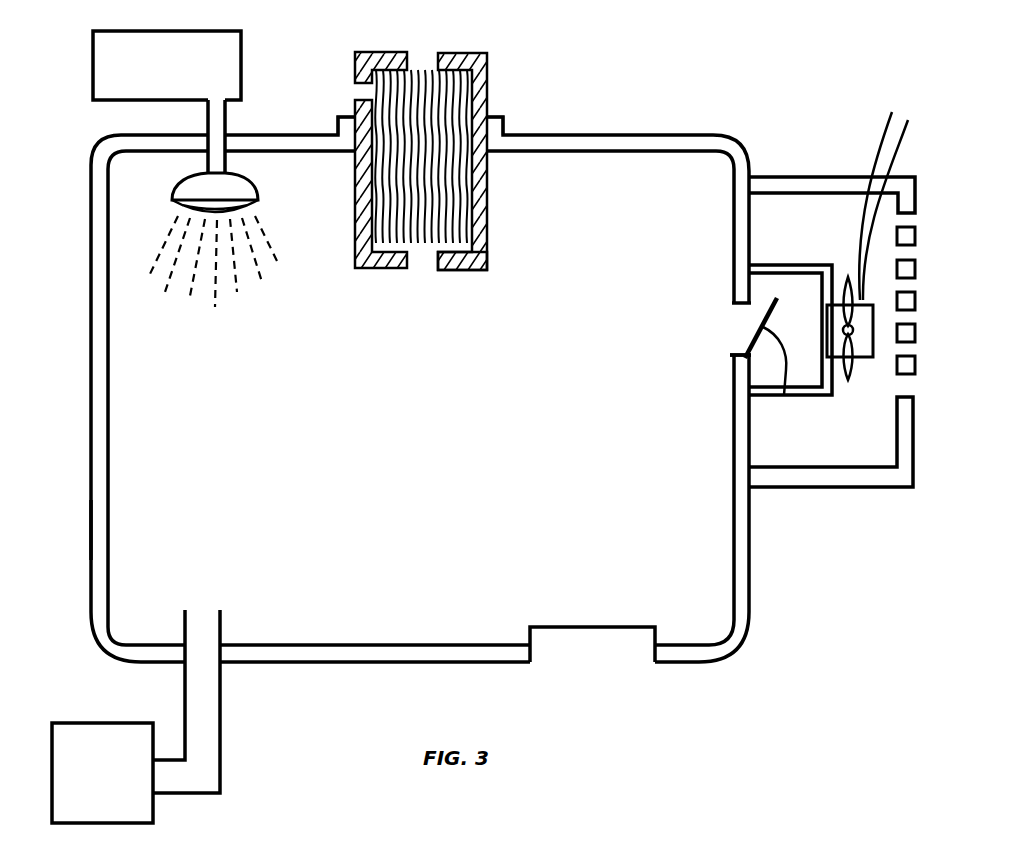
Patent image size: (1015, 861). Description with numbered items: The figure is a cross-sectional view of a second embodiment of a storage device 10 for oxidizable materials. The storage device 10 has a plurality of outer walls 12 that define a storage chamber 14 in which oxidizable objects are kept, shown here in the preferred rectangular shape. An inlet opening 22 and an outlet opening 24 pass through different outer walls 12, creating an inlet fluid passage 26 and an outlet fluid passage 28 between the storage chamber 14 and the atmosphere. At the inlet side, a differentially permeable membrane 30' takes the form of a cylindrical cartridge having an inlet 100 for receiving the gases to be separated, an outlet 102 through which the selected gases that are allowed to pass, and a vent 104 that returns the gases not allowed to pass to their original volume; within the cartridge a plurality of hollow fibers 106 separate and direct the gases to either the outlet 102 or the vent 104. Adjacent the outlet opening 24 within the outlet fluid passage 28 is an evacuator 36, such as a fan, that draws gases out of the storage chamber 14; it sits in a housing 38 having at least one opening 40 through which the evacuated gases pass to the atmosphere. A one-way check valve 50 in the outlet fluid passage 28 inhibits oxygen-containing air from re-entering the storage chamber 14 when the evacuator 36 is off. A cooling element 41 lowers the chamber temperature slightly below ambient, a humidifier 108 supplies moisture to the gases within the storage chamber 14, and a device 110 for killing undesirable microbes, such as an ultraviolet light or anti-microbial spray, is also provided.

The storage device 10 is at (78, 240).
The outer walls 12 is at (100, 378).
The storage chamber 14 is at (126, 552).
The inlet opening 22 is at (488, 147).
The outlet opening 24 is at (740, 352).
The inlet fluid passage 26 is at (405, 197).
The outlet fluid passage 28 is at (738, 323).
The differentially permeable membrane 30' is at (507, 161).
The evacuator 36 is at (872, 352).
The housing 38 is at (905, 477).
The opening 40 is at (918, 247).
The cooling element 41 is at (618, 652).
The one-way check valve 50 is at (782, 397).
The inlet 100 is at (432, 181).
The outlet 102 is at (438, 257).
The vent 104 is at (355, 90).
The hollow fibers 106 is at (446, 217).
The humidifier 108 is at (93, 745).
The device for killing undesirable microbes 110 is at (108, 72).